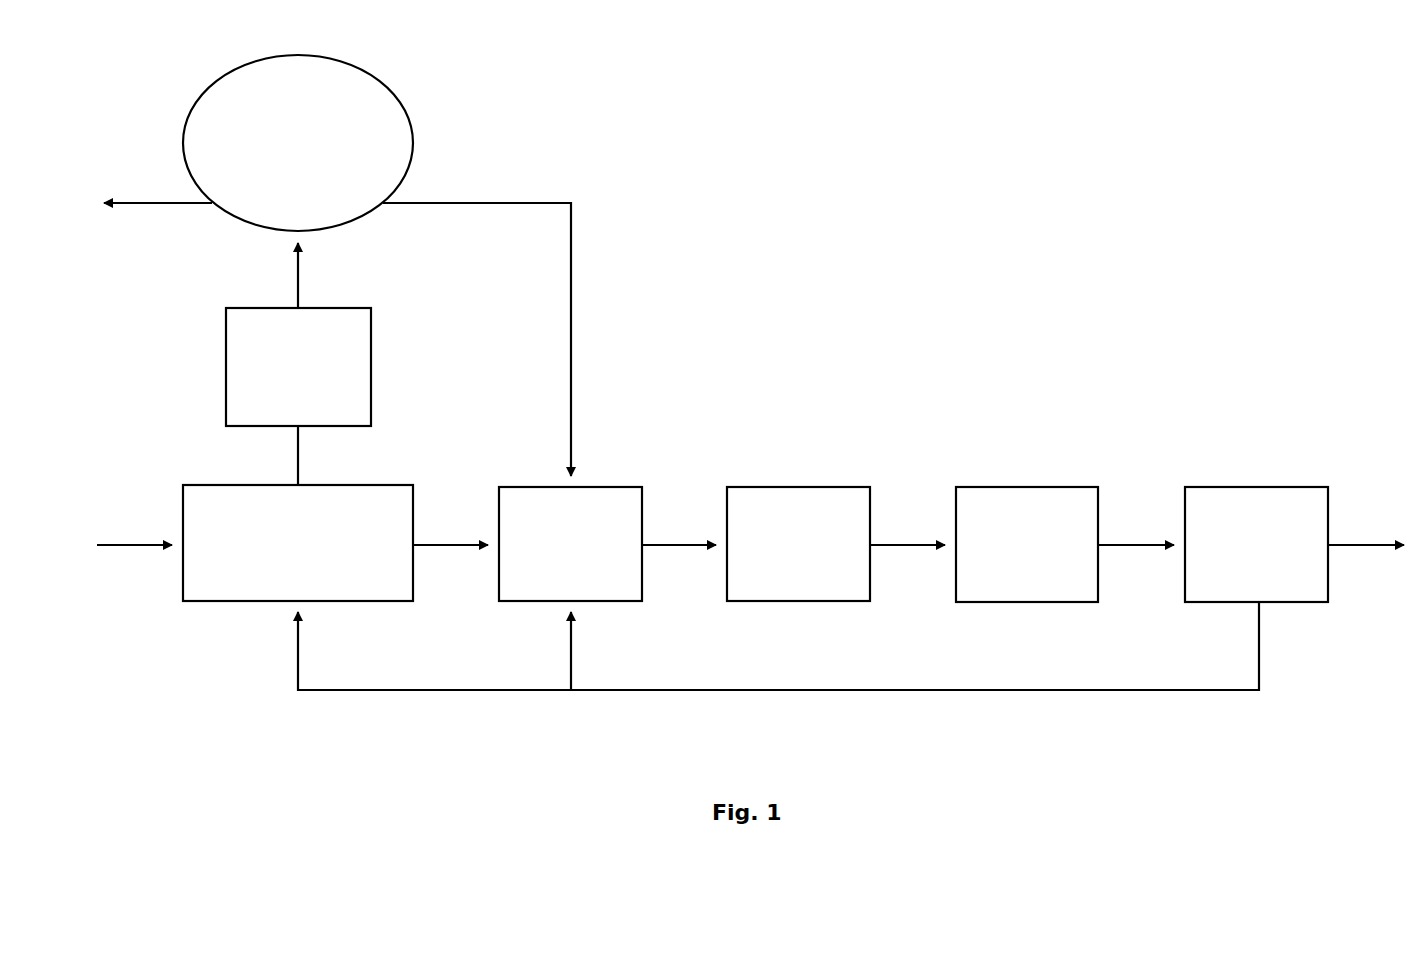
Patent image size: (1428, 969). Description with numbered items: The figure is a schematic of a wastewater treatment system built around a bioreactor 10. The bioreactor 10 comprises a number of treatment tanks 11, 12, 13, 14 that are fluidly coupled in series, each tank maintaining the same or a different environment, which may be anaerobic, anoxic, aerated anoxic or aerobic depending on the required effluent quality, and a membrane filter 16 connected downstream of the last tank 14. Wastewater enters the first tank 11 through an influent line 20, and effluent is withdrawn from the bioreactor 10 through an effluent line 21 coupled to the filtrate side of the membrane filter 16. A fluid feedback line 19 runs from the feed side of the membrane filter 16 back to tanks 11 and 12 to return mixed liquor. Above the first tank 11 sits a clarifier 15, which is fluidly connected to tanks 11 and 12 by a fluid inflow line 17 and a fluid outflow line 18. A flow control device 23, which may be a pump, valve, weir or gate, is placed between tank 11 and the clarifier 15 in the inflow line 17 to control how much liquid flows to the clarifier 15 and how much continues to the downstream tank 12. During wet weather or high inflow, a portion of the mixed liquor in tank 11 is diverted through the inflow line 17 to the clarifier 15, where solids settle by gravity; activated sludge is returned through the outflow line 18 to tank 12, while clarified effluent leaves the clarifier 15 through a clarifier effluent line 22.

The bioreactor 10 is at (928, 163).
The treatment tank 11 is at (213, 601).
The treatment tank 12 is at (613, 487).
The treatment tank 13 is at (841, 487).
The treatment tank 14 is at (1069, 487).
The clarifier 15 is at (409, 112).
The membrane filter 16 is at (1299, 487).
The fluid inflow line 17 is at (299, 275).
The fluid outflow line 18 is at (571, 248).
The fluid feedback line 19 is at (1018, 690).
The influent line 20 is at (140, 545).
The effluent line 21 is at (1377, 546).
The clarifier effluent line 22 is at (137, 203).
The flow control device 23 is at (371, 366).